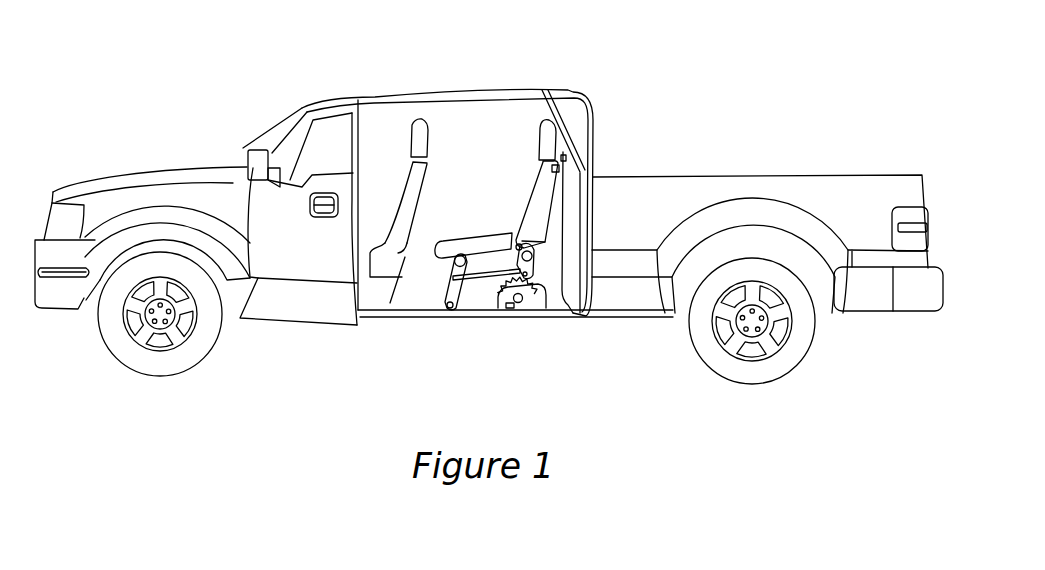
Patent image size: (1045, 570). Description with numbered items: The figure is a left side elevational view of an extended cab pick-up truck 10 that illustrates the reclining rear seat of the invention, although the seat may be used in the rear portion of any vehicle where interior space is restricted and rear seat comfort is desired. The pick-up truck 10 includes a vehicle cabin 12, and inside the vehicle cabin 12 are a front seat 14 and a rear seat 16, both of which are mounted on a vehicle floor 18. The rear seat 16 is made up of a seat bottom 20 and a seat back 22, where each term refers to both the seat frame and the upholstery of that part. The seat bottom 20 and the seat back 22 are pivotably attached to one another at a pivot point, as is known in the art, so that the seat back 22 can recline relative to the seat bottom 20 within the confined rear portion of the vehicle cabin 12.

The extended cab pick-up truck 10 is at (222, 128).
The vehicle cabin 12 is at (452, 118).
The front seat 14 is at (405, 226).
The rear seat 16 is at (528, 227).
The vehicle floor 18 is at (486, 305).
The seat bottom 20 is at (443, 253).
The seat back 22 is at (540, 195).